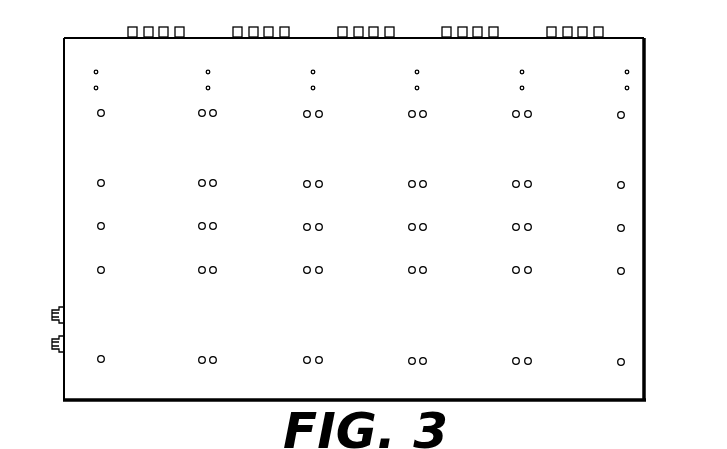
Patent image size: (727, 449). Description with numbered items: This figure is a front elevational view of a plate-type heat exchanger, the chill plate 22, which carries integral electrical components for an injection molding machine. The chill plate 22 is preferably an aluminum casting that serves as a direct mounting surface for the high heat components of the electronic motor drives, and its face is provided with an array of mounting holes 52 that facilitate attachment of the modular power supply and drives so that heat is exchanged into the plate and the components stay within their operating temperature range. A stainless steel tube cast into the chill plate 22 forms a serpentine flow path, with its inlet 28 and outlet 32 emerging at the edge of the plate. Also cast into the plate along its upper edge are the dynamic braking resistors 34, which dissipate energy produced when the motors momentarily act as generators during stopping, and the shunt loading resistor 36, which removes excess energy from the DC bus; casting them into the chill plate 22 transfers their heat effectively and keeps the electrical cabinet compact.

The chill plate 22 is at (588, 338).
The inlet 28 is at (52, 314).
The outlet 32 is at (52, 346).
The dynamic braking resistors 34 is at (163, 27).
The shunt loading resistor 36 is at (131, 27).
The mounting holes 52 is at (319, 117).